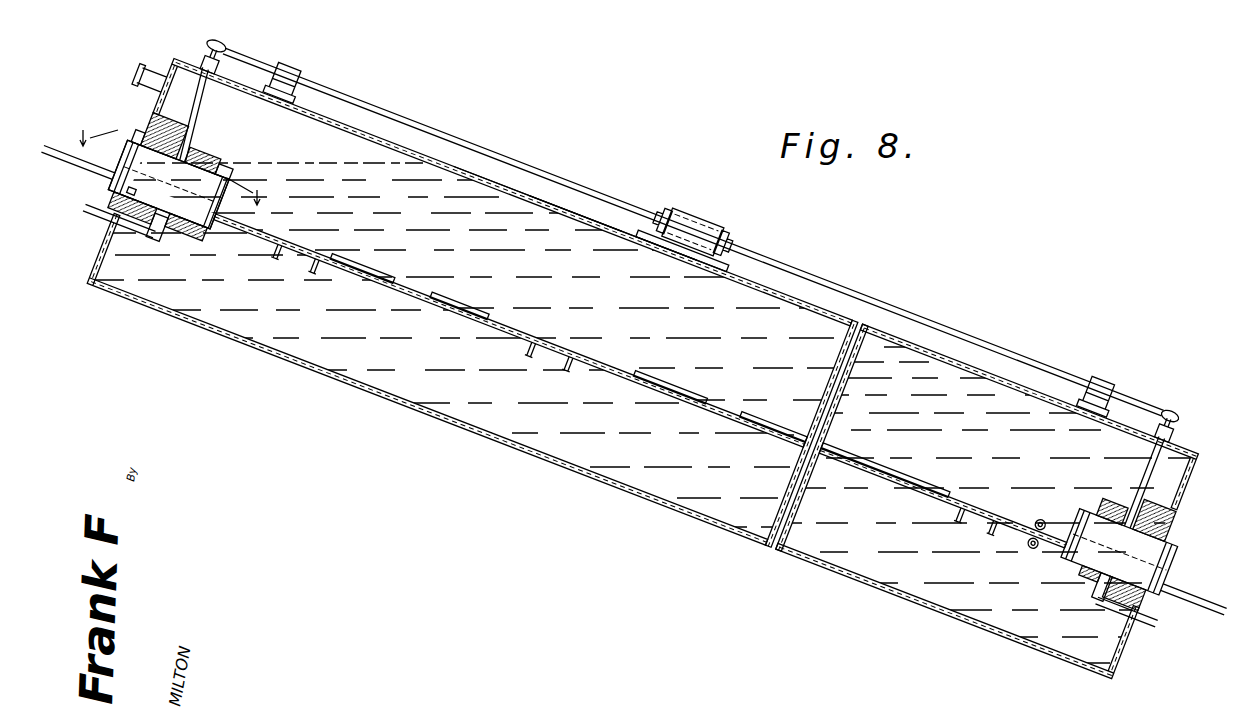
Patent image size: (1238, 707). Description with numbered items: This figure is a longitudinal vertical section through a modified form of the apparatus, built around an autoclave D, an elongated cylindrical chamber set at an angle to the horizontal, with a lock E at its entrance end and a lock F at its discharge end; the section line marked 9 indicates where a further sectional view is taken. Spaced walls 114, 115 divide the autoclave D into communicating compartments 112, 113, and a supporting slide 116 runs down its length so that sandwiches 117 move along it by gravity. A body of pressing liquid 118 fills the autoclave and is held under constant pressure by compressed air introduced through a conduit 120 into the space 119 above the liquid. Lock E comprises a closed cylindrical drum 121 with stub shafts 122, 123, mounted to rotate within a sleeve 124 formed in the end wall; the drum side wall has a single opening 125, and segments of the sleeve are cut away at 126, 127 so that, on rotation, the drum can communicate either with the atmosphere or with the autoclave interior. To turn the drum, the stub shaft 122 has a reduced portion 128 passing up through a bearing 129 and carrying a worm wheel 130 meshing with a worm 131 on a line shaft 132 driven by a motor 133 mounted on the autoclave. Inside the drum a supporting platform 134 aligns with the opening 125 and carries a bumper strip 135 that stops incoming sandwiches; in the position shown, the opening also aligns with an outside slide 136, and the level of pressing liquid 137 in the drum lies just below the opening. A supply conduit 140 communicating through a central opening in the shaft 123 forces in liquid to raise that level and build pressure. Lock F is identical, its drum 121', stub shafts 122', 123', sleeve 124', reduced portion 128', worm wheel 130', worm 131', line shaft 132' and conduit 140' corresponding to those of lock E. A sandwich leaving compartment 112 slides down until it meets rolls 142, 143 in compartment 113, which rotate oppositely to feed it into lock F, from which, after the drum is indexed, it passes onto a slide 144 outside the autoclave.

The compartment 112 is at (849, 318).
The compartment 113 is at (917, 343).
The wall 114 is at (826, 392).
The wall 115 is at (788, 488).
The supporting slide 116 is at (708, 416).
The sandwiches 117 is at (492, 327).
The pressing liquid 118 is at (480, 196).
The space 119 is at (338, 93).
The autoclave D is at (560, 200).
The lock E is at (140, 124).
The lock F is at (1177, 551).
The conduit 120 is at (163, 75).
The drum 121 is at (230, 184).
The stub shaft 122 is at (202, 152).
The stub shaft 123 is at (145, 221).
The sleeve 124 is at (155, 126).
The opening 125 is at (128, 164).
The cut-off segment 126 is at (133, 118).
The cut-off segment 127 is at (226, 162).
The reduced portion 128 is at (192, 114).
The bearing 129 is at (207, 58).
The worm wheel 130 is at (233, 39).
The worm 131 is at (235, 64).
The line shaft 132 is at (309, 82).
The motor 133 is at (693, 215).
The supporting platform 134 is at (203, 228).
The bumper strip 135 is at (247, 217).
The slide 136 is at (58, 170).
The pressing liquid 137 is at (116, 187).
The supply conduit 140 is at (111, 221).
The drum 121' is at (1070, 526).
The stub shaft 122' is at (1136, 513).
The stub shaft 123' is at (1085, 587).
The sleeve 124' is at (1131, 589).
The reduced portion 128' is at (1141, 477).
The worm wheel 130' is at (1190, 412).
The worm 131' is at (1165, 404).
The line shaft 132' is at (1058, 369).
The conduit 140' is at (1136, 619).
The roll 142 is at (1039, 519).
The roll 143 is at (1030, 546).
The slide 144 is at (1204, 598).
The section line 9- 9 is at (169, 163).